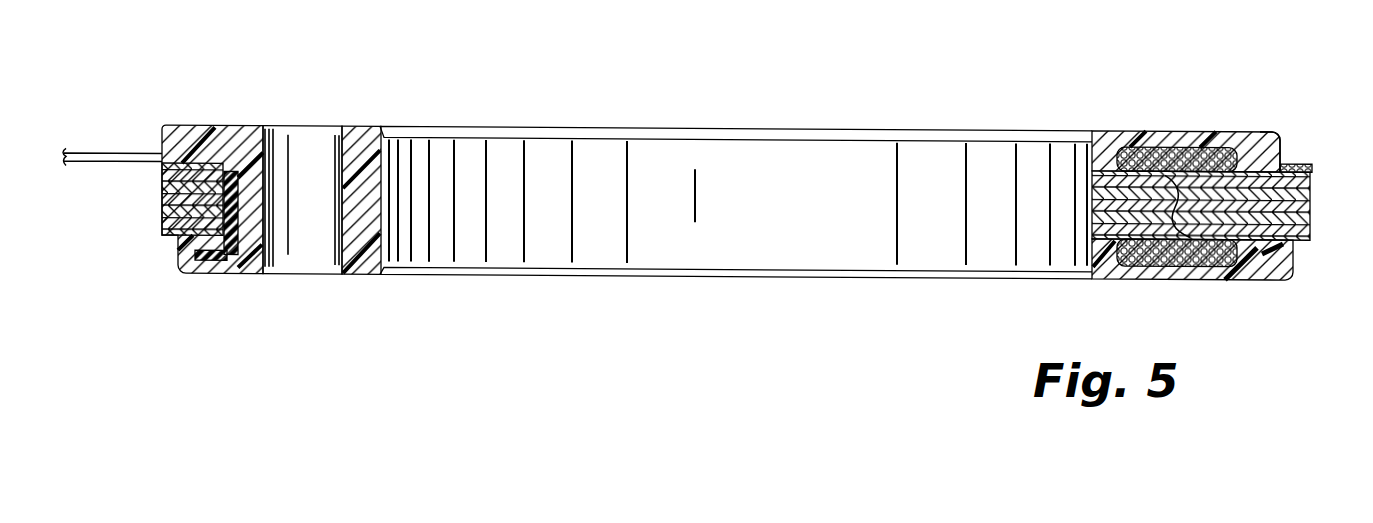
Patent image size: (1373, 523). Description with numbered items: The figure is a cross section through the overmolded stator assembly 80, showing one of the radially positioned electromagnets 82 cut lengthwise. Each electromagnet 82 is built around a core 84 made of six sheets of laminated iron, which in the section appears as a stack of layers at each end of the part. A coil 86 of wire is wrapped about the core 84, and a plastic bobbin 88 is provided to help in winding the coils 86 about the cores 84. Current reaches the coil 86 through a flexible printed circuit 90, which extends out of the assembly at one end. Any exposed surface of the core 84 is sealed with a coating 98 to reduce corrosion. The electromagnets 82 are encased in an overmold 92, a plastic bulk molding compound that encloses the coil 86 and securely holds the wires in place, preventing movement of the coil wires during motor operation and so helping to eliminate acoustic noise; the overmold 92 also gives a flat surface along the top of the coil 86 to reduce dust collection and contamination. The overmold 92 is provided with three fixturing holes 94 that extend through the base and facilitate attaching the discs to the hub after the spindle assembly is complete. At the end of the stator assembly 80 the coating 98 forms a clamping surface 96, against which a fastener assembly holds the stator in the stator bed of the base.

The stator assembly 80 is at (740, 118).
The electromagnet 82 is at (1326, 215).
The core 84 is at (162, 208).
The coil 86 is at (1147, 145).
The plastic bobbin 88 is at (223, 254).
The flexible printed circuit 90 is at (108, 152).
The overmold 92 is at (357, 140).
The fixturing hole 94 is at (307, 248).
The clamping surface 96 is at (1302, 165).
The coating 98 is at (1291, 163).